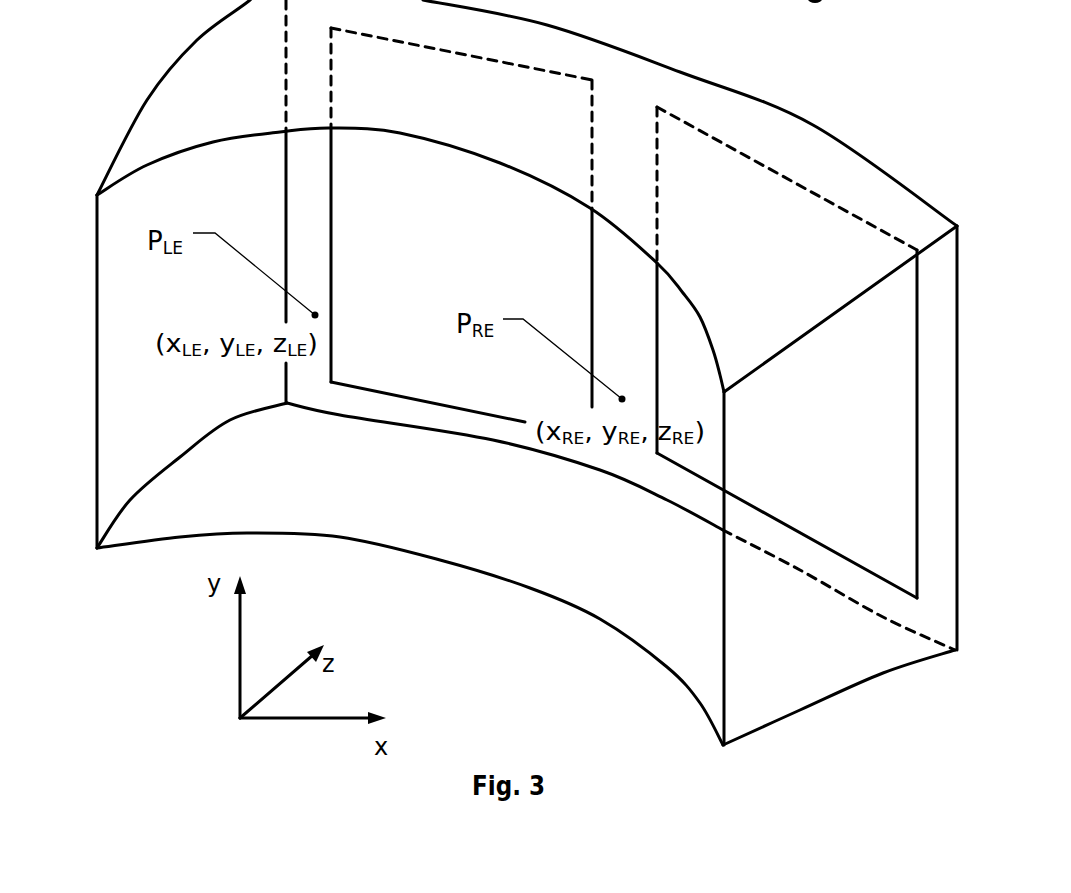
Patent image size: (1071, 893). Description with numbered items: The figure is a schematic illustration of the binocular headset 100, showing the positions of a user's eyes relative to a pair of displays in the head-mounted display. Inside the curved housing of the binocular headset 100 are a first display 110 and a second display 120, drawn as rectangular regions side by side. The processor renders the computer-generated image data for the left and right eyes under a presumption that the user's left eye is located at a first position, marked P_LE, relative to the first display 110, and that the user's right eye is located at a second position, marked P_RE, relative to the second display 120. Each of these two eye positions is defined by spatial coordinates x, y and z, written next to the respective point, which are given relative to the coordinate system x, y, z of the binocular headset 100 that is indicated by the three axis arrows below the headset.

The binocular headset 100 is at (910, 89).
The first display 110 is at (419, 263).
The second display 120 is at (736, 352).